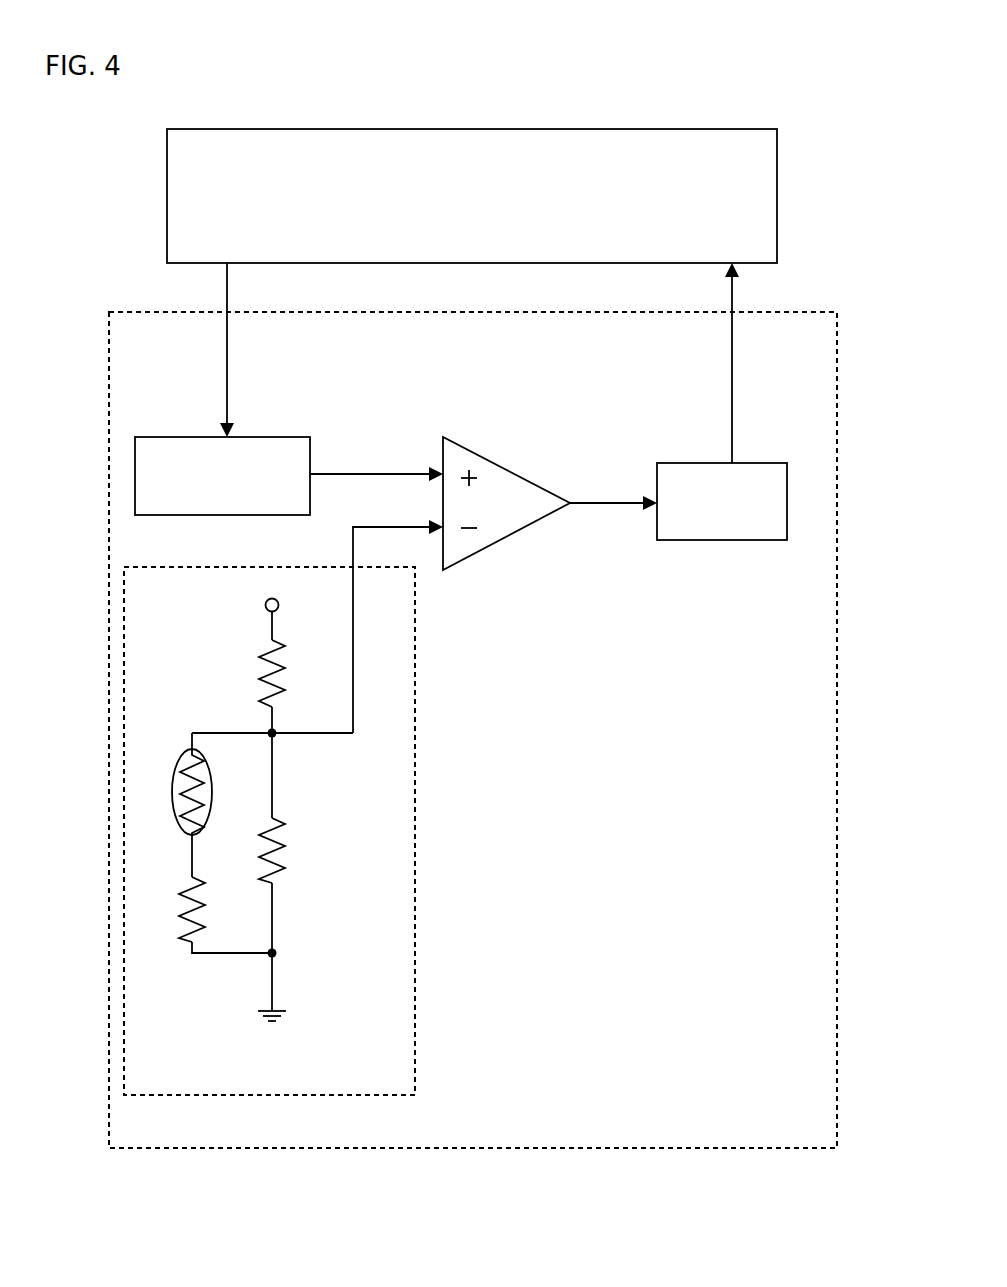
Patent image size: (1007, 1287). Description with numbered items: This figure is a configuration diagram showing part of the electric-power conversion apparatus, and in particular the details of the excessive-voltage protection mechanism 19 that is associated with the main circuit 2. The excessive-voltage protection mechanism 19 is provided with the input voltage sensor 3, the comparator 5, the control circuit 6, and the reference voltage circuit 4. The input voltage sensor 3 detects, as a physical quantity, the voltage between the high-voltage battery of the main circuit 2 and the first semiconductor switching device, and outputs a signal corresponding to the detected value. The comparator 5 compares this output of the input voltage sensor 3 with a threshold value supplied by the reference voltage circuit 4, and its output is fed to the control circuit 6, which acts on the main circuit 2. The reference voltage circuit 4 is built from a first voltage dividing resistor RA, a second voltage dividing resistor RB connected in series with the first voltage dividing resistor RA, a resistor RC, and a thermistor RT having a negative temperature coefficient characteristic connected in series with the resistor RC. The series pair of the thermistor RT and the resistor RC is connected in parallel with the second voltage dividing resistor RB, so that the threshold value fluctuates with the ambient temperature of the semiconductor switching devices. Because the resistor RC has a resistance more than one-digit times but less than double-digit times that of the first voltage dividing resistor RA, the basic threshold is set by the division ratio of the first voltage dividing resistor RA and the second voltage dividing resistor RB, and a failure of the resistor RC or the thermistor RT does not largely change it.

The main circuit 2 is at (775, 228).
The excessive-voltage protection mechanism 19 is at (800, 313).
The input voltage sensor 3 is at (295, 447).
The comparator 5 is at (507, 480).
The control circuit 6 is at (695, 540).
The reference voltage circuit 4 is at (409, 703).
The first voltage dividing resistor RA is at (263, 680).
The second voltage dividing resistor RB is at (285, 852).
The resistor RC is at (178, 923).
The thermistor RT is at (187, 762).